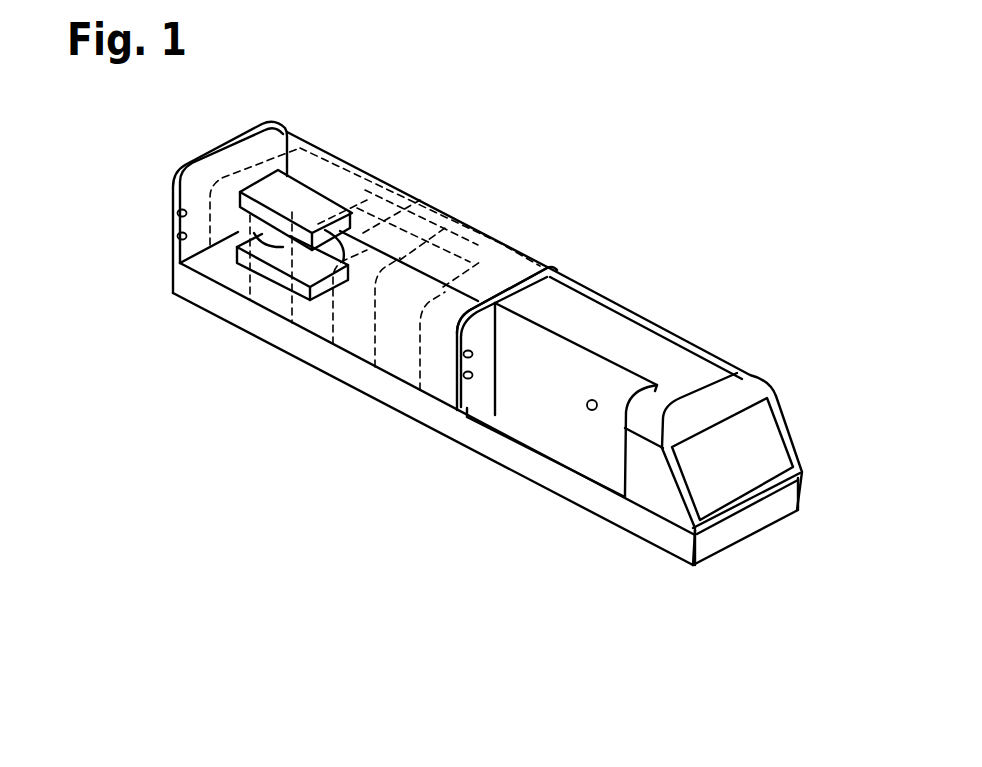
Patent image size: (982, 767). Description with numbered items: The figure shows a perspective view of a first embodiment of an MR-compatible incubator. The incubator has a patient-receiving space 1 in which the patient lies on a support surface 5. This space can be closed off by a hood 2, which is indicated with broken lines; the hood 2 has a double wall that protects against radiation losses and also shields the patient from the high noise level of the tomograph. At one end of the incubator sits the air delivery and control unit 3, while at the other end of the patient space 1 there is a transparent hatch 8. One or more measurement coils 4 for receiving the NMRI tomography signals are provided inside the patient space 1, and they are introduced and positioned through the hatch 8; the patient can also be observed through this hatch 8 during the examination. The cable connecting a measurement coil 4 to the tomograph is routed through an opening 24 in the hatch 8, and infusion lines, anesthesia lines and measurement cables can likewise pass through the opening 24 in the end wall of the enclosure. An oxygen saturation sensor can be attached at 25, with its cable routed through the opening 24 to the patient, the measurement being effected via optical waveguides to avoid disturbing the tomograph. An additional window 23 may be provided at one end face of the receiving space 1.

The patient-receiving space 1 is at (370, 258).
The hood 2 is at (375, 187).
The air delivery and control unit 3 is at (683, 367).
The measurement coils 4 is at (310, 202).
The support surface 5 is at (358, 338).
The hatch 8 is at (274, 136).
The additional window 23 is at (537, 270).
The opening 24 is at (177, 237).
The attachment point for SpO2 sensor 25 is at (590, 412).